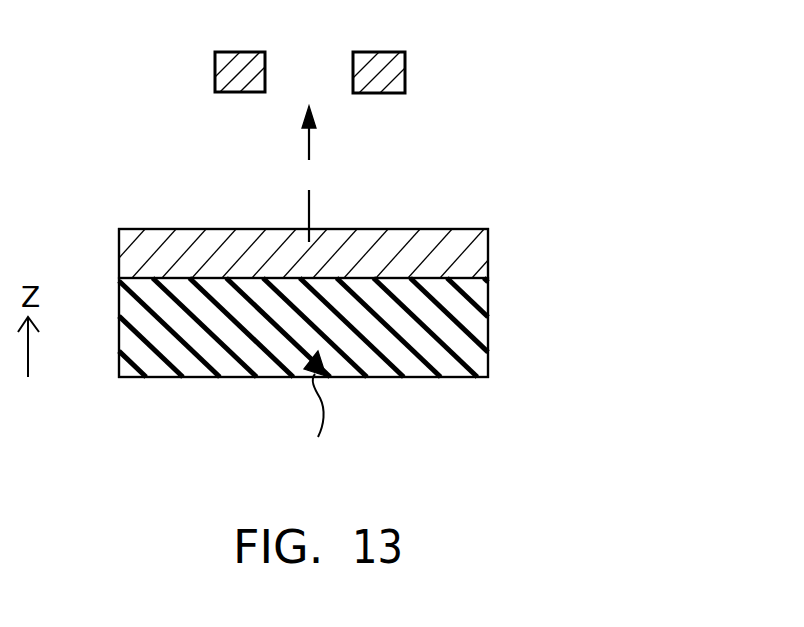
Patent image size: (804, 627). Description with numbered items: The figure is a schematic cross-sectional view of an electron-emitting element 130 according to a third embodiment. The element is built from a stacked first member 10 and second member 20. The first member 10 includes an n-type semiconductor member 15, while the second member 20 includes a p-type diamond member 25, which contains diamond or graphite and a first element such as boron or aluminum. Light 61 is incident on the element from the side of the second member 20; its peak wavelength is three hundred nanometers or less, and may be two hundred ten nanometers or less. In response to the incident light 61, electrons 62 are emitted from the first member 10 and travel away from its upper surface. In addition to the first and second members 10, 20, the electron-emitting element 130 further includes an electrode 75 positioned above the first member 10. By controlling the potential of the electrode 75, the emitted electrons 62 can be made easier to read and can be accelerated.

The electron-emitting element 130 is at (528, 97).
The first member 10 is at (467, 268).
The n-type semiconductor member 15 is at (467, 242).
The second member 20 is at (455, 313).
The diamond member 25 is at (447, 350).
The electrode 75 is at (214, 69).
The electrons 62 is at (309, 143).
The light 61 is at (325, 415).